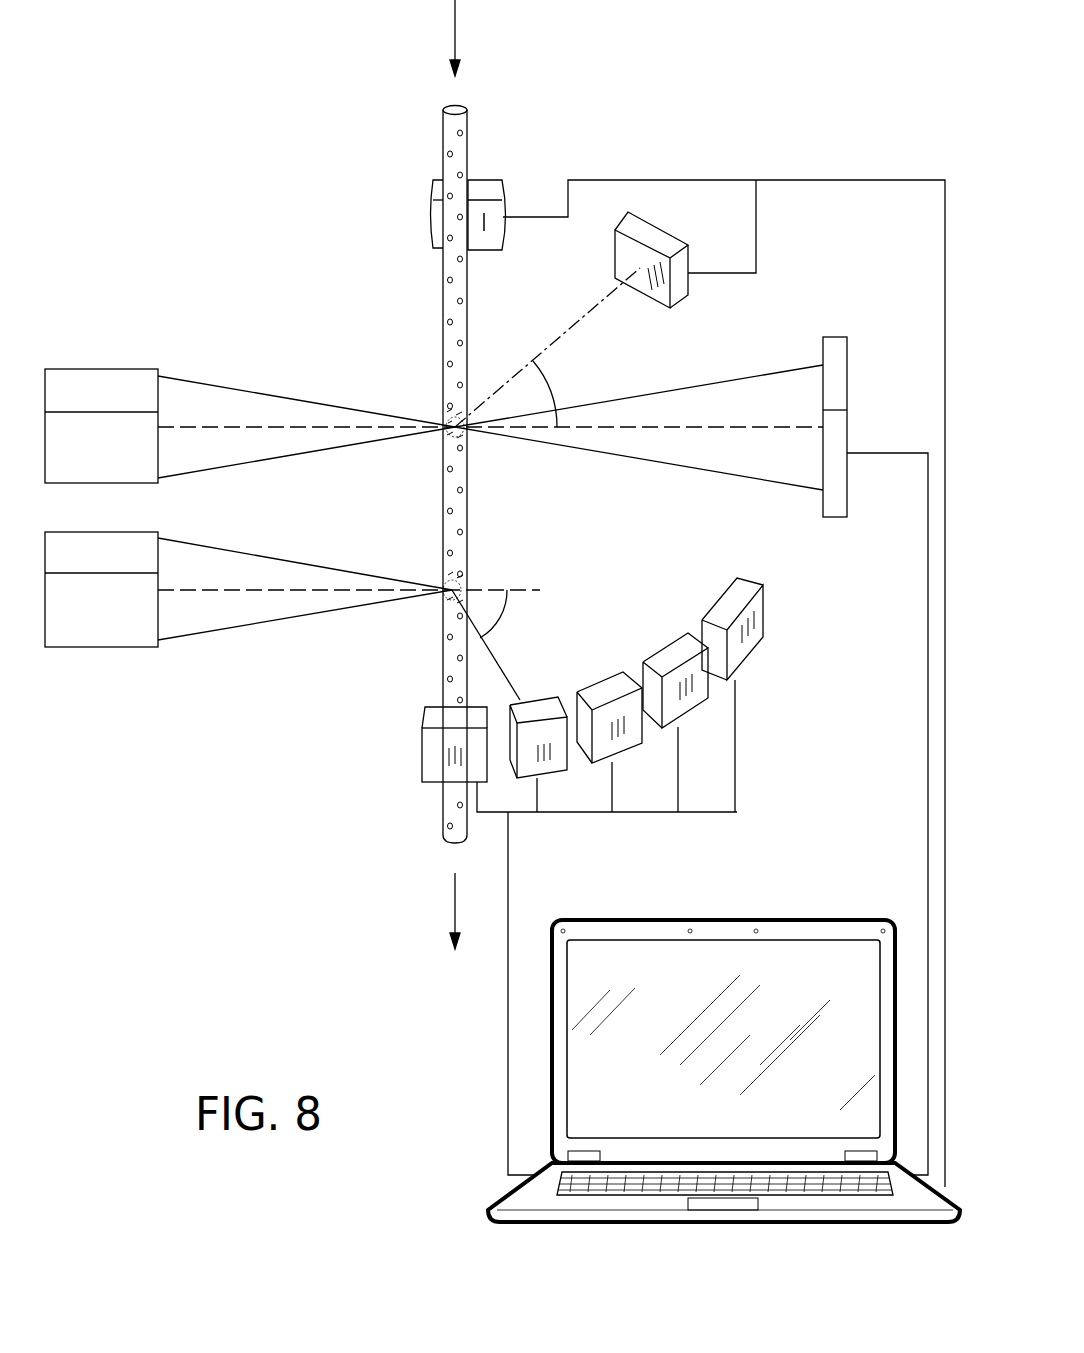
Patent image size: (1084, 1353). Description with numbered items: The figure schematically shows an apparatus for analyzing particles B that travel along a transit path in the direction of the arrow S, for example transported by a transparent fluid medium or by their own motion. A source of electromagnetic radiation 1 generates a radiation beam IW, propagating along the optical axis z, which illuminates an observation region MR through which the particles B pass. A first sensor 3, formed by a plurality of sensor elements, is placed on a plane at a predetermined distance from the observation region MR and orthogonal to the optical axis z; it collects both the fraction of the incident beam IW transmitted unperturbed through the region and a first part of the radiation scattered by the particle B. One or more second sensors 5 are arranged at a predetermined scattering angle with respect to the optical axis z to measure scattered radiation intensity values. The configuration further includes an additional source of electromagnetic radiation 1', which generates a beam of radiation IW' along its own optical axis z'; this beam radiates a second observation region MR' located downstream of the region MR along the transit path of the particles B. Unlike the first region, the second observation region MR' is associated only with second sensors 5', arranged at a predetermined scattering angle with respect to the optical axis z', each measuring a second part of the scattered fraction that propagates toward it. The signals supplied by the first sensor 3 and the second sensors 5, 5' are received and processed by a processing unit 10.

The transit direction arrow S is at (453, 42).
The particles B is at (443, 320).
The second sensor 5 is at (560, 210).
The source of electromagnetic radiation 1 is at (101, 376).
The radiation beam IW is at (490, 384).
The optical axis z is at (490, 478).
The observation region MR is at (408, 387).
The first sensor 3 is at (847, 380).
The additional source of electromagnetic radiation 1' is at (127, 569).
The beam of radiation IW' is at (305, 589).
The optical axis z' is at (349, 639).
The second observation region MR' is at (398, 553).
The second sensor 5' is at (592, 680).
The processing unit 10 is at (645, 1235).